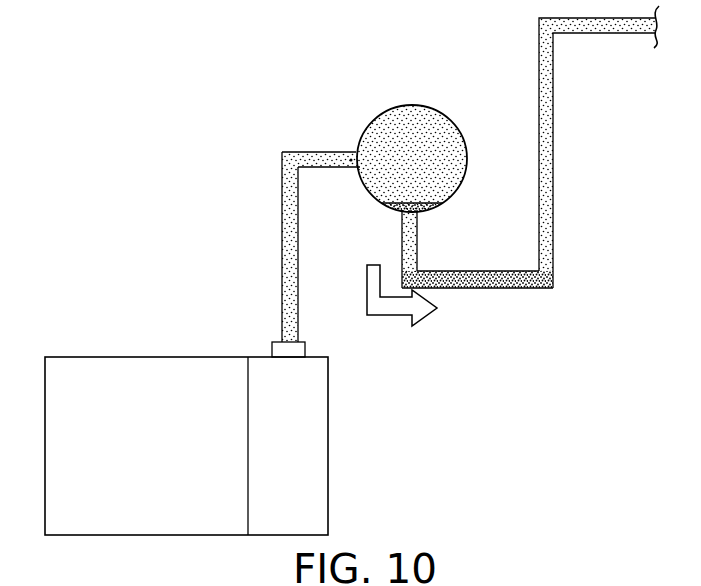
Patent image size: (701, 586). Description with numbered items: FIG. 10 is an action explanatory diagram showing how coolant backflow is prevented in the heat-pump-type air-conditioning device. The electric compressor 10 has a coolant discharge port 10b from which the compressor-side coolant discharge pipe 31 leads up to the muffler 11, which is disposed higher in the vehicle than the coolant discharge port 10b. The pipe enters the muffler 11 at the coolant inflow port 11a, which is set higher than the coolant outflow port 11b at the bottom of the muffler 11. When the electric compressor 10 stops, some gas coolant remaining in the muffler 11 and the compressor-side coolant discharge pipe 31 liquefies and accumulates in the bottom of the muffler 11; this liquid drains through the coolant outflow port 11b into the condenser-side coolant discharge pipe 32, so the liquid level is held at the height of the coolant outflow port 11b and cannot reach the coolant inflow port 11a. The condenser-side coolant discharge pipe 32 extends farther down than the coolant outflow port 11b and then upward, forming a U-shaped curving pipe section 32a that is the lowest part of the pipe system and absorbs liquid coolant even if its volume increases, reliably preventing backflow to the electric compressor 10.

The electric compressor 10 is at (150, 351).
The coolant discharge port 10b is at (304, 350).
The muffler 11 is at (386, 99).
The coolant inflow port 11a is at (351, 159).
The coolant outflow port 11b is at (411, 222).
The compressor-side coolant discharge pipe 31 is at (282, 213).
The condenser-side coolant discharge pipe 32 is at (553, 208).
The U-shaped curving pipe section 32a is at (510, 289).